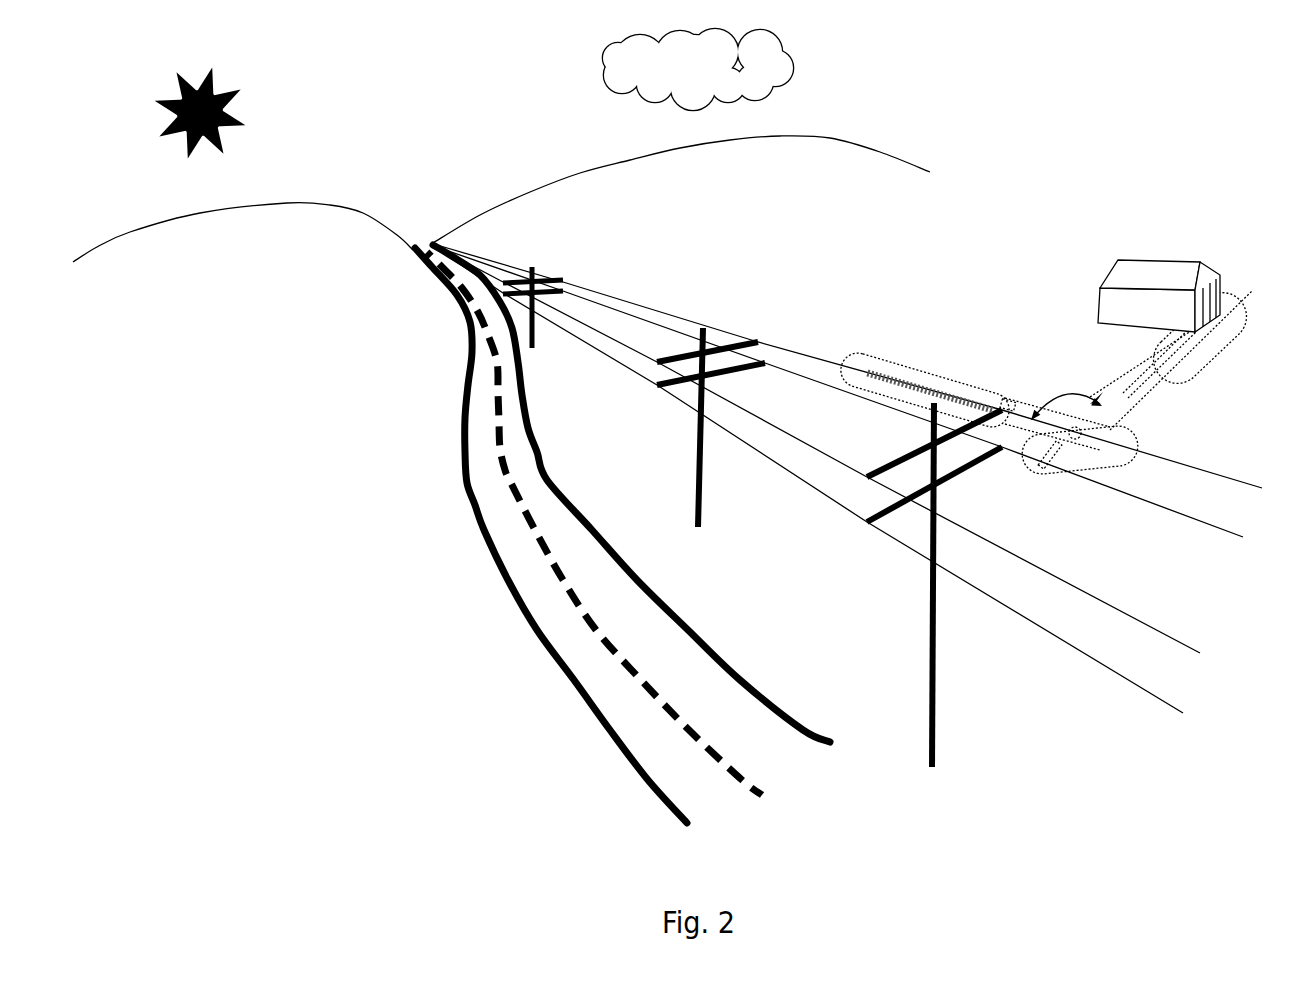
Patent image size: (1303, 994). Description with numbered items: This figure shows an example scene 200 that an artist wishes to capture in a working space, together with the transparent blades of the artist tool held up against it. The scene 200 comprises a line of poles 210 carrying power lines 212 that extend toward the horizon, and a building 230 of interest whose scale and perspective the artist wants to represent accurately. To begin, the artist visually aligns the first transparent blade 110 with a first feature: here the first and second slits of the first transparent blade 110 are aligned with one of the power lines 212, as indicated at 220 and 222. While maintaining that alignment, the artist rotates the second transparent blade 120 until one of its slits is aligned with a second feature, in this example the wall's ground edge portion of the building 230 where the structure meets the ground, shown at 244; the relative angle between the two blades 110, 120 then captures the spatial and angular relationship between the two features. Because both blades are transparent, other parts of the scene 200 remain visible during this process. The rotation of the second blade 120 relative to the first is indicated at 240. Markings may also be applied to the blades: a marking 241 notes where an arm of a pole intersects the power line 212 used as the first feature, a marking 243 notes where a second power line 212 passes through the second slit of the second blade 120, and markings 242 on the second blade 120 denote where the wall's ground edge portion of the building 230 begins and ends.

The scene 200 is at (1085, 104).
The first transparent blade 110 is at (905, 360).
The second transparent blade 120 is at (1153, 393).
The poles 210 is at (938, 663).
The power lines 212 is at (629, 286).
The alignment of first slit with power line 220 is at (828, 346).
The alignment of second slit with power line 222 is at (1147, 468).
The building 230 is at (1134, 246).
The rotation / vibration sensing region 240 is at (1068, 400).
The marking 241 is at (1005, 388).
The markings 242 is at (1231, 340).
The marking 243 is at (1047, 478).
The wall's ground edge portion 244 is at (1233, 292).